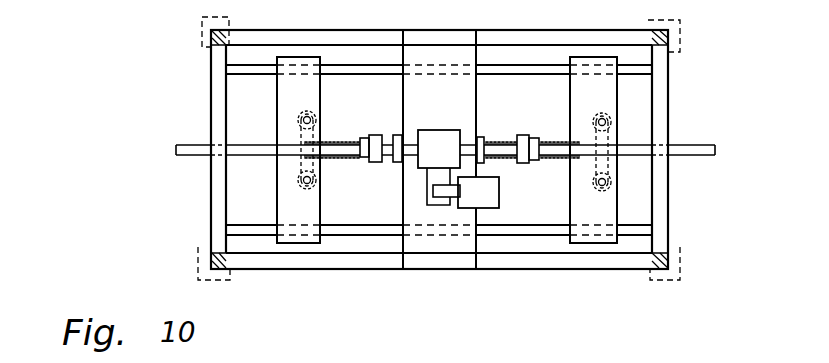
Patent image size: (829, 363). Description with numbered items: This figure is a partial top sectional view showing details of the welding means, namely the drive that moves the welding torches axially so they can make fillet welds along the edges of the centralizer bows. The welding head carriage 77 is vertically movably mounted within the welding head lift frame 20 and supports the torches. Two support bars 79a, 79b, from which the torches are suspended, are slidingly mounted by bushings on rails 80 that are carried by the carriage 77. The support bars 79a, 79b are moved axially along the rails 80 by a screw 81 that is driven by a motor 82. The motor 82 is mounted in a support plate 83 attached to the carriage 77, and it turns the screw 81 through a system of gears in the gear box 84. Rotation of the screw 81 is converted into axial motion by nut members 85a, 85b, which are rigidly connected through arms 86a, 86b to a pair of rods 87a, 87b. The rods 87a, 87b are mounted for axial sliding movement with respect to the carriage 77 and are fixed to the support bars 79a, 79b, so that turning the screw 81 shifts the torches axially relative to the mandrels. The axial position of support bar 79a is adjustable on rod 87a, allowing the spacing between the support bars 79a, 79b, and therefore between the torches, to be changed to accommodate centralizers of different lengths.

The welding head lift frame 20 is at (682, 27).
The welding head carriage 77 is at (668, 86).
The support bar 79a is at (297, 245).
The support bar 79b is at (618, 211).
The rails 80 is at (538, 72).
The screw 81 is at (303, 150).
The motor 82 is at (492, 193).
The support plate 83 is at (478, 38).
The gear box 84 is at (433, 121).
The nut member 85a is at (362, 137).
The nut member 85b is at (540, 134).
The arm 86a is at (362, 160).
The arm 86b is at (525, 136).
The rod 87a is at (240, 140).
The rod 87b is at (697, 144).